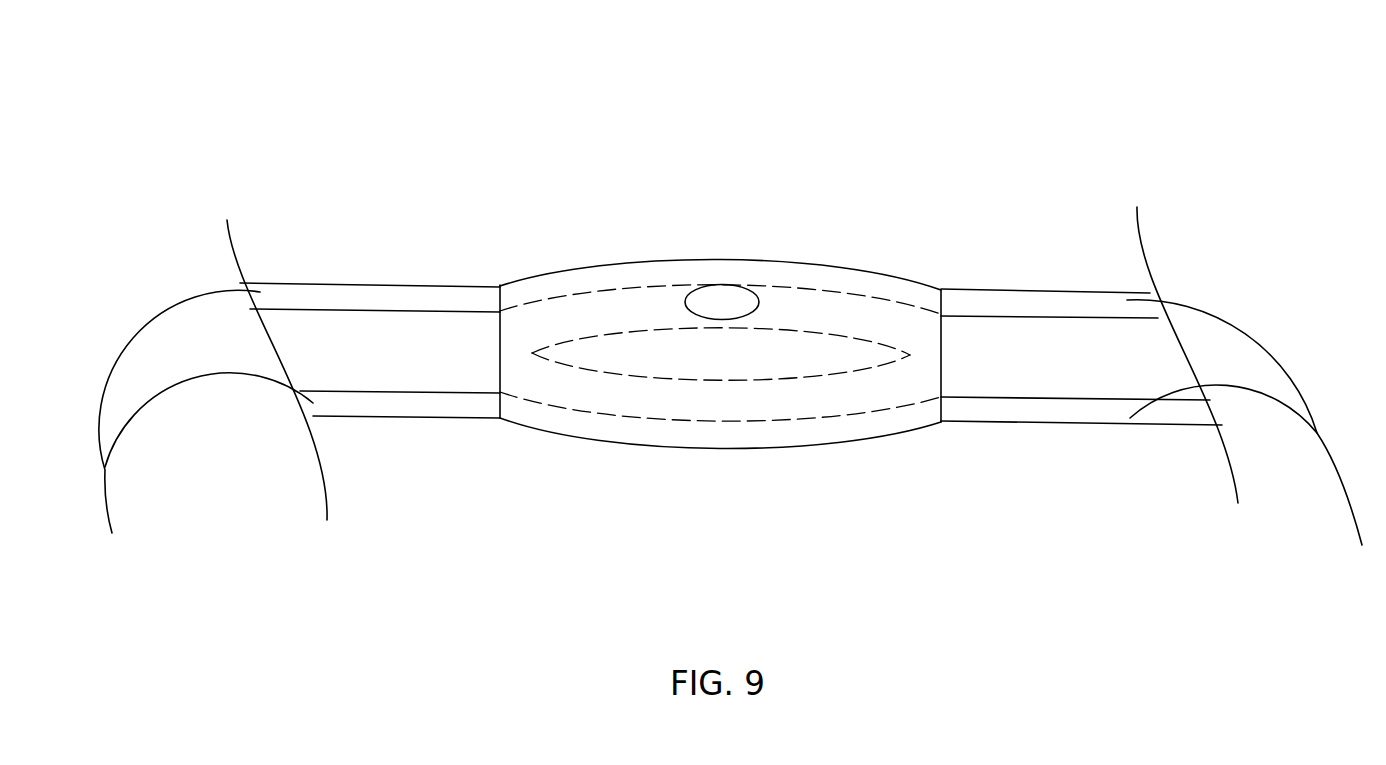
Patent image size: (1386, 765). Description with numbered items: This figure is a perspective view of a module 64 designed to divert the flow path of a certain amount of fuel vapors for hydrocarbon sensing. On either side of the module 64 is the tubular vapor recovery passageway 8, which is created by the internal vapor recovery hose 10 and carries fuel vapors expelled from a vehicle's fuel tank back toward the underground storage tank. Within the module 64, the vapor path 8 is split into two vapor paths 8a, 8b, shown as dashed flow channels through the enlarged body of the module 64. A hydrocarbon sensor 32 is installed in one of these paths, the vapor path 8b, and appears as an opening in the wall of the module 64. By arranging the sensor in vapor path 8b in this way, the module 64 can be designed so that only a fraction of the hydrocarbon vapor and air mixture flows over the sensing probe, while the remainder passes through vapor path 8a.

The vapor recovery passageway 8 is at (397, 367).
The vapor path 8a is at (587, 328).
The vapor path 8b is at (649, 409).
The internal vapor recovery hose 10 is at (736, 398).
The hydrocarbon sensor 32 is at (687, 302).
The module 64 is at (748, 108).